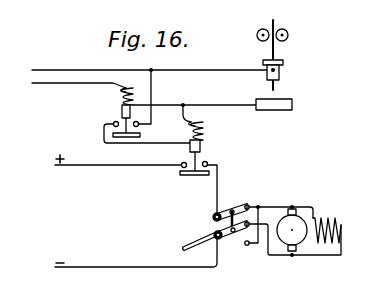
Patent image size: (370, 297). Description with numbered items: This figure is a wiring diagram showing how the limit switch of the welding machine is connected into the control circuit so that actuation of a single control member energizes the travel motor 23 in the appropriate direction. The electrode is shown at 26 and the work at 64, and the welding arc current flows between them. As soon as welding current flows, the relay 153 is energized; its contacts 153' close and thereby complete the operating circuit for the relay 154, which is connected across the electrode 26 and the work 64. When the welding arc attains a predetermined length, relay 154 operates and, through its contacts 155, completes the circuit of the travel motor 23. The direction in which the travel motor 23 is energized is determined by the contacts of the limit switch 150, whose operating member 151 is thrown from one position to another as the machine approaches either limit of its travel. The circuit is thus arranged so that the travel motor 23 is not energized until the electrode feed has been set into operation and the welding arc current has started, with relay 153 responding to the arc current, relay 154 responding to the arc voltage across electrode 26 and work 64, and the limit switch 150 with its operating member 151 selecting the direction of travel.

The relay 153 is at (112, 112).
The relay contacts 153' is at (111, 116).
The relay 154 is at (201, 128).
The contacts 155 is at (208, 162).
The limit switch 150 is at (230, 209).
The operating member 151 is at (197, 243).
The electrode 26 is at (280, 77).
The work 64 is at (293, 105).
The travel motor 23 is at (297, 237).